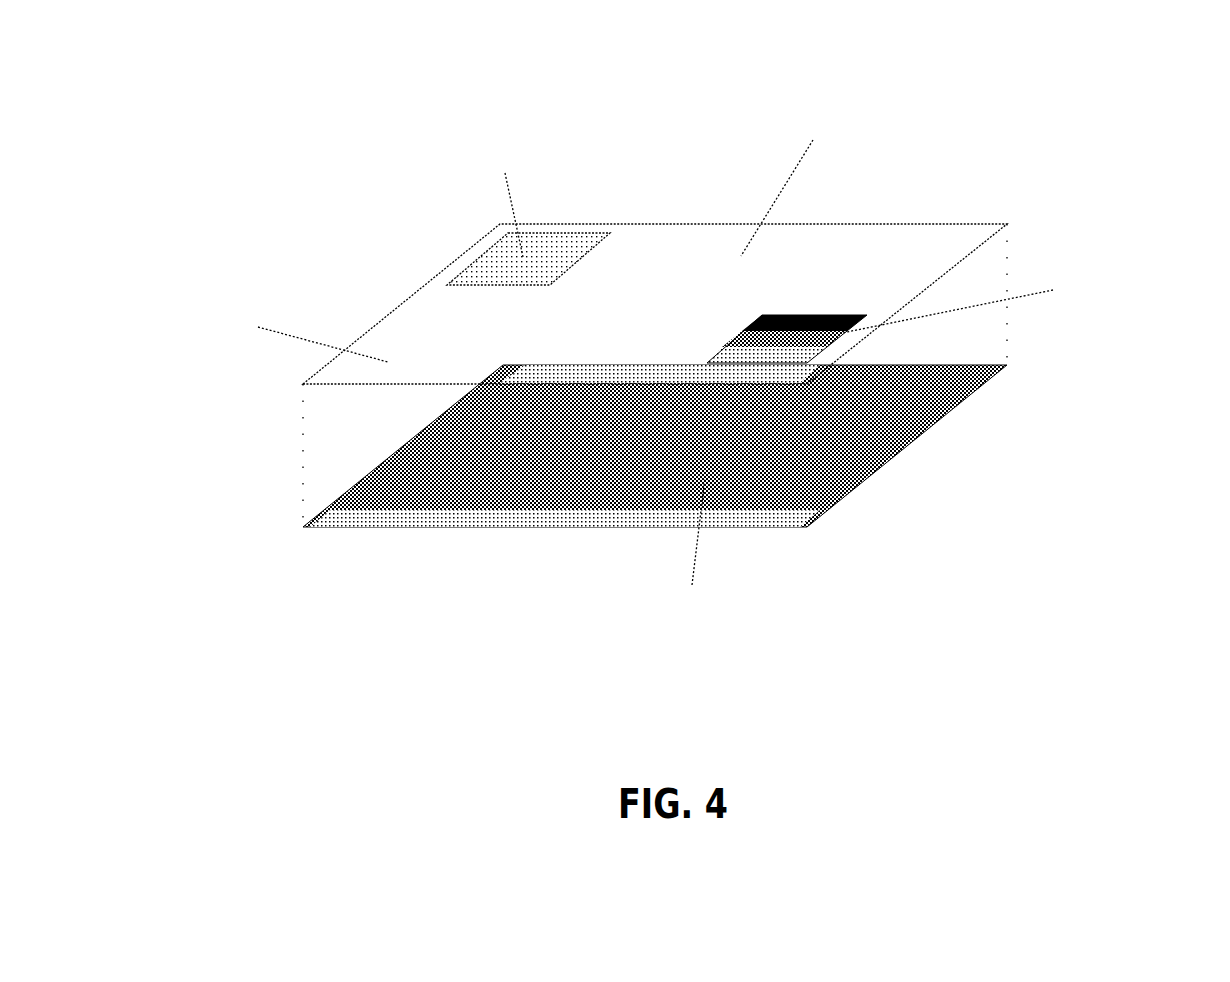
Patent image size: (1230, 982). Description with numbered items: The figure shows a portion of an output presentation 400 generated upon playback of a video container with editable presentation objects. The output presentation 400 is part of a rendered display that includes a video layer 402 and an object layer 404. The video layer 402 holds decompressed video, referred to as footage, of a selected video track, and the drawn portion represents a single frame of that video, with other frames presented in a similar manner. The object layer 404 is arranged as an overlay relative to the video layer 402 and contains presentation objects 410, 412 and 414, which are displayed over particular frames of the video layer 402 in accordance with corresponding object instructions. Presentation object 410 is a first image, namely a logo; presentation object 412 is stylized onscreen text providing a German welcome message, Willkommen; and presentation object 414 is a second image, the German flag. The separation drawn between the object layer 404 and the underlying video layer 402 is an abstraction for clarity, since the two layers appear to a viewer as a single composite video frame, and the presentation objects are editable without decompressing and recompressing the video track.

The output presentation 400 is at (294, 91).
The video layer 402 is at (845, 487).
The object layer 404 is at (420, 296).
The presentation object 410 is at (583, 240).
The presentation object 412 is at (686, 240).
The presentation object 414 is at (745, 331).